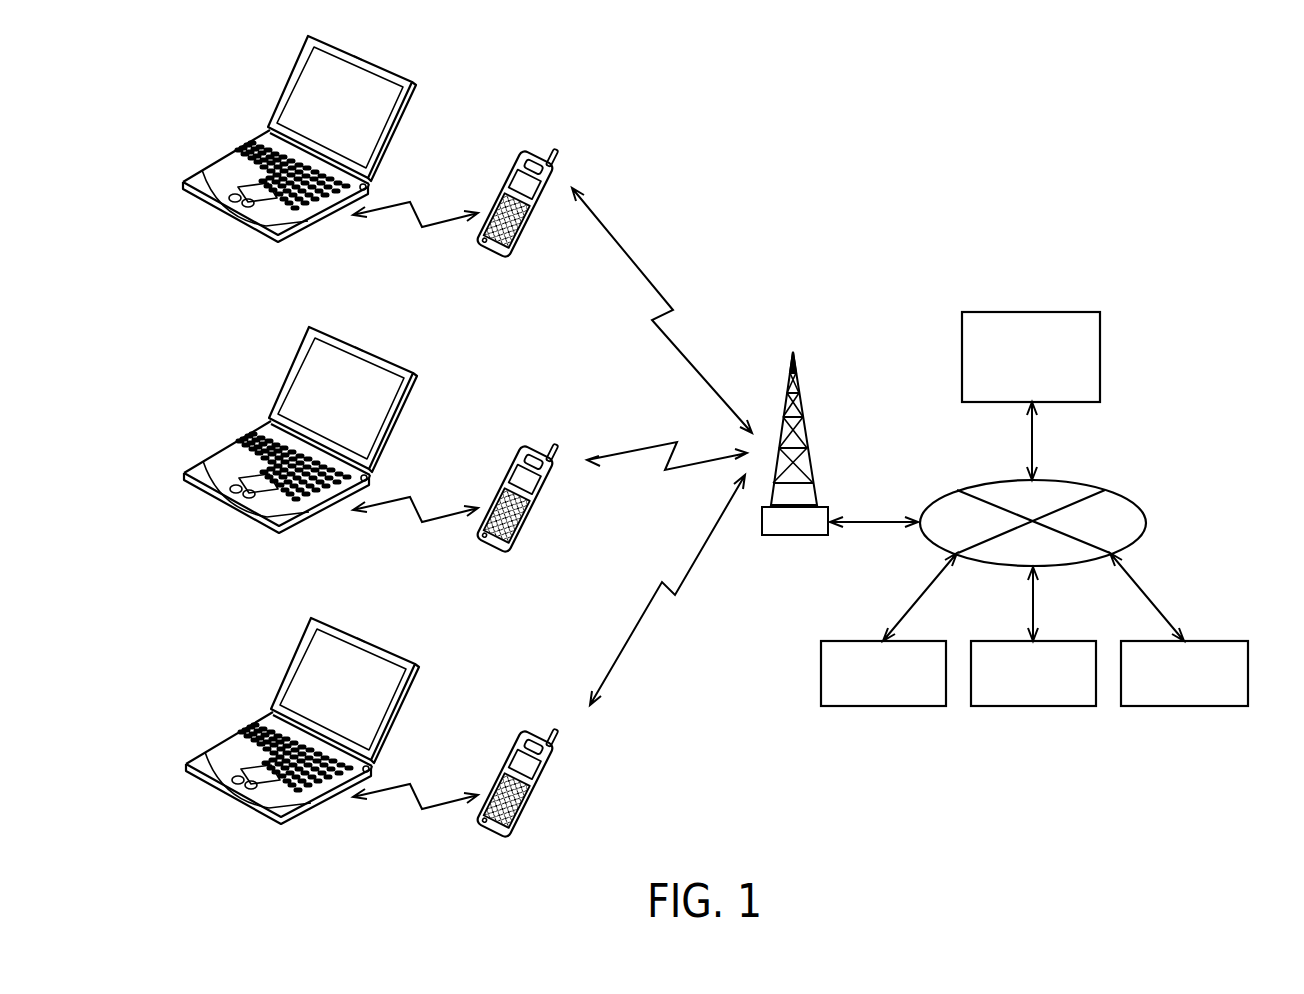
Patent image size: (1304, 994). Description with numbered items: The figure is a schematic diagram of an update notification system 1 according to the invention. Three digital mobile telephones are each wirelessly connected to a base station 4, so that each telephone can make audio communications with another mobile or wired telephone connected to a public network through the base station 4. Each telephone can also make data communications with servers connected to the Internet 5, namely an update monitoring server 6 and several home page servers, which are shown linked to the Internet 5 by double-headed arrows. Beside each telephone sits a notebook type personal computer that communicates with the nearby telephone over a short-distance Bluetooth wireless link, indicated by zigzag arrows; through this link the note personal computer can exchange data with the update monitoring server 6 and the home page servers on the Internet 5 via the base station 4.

The update notification system 1 is at (1228, 309).
The base station 4 is at (809, 407).
The Internet 5 is at (1097, 480).
The update monitoring server 6 is at (1071, 312).